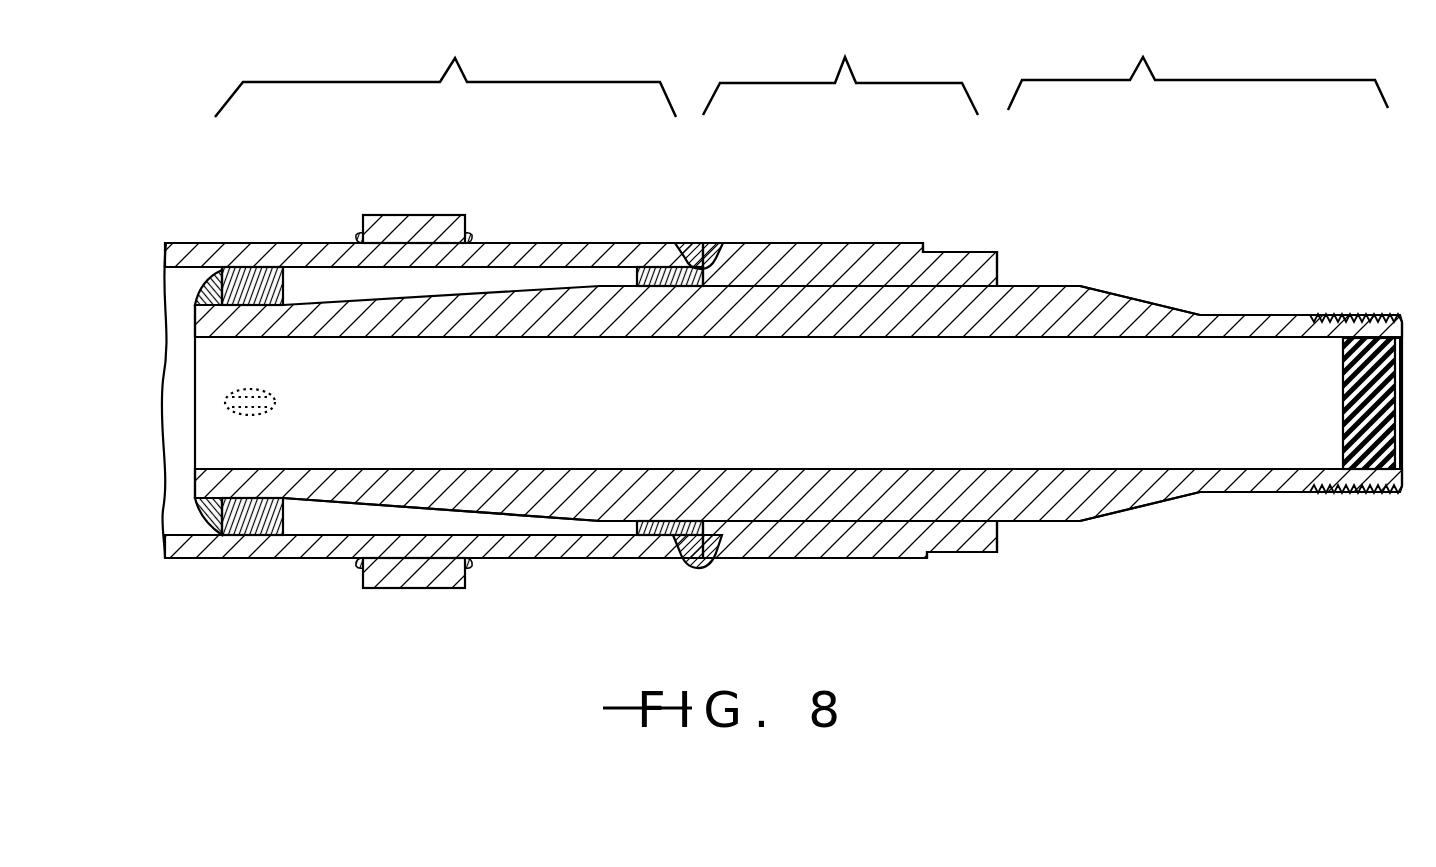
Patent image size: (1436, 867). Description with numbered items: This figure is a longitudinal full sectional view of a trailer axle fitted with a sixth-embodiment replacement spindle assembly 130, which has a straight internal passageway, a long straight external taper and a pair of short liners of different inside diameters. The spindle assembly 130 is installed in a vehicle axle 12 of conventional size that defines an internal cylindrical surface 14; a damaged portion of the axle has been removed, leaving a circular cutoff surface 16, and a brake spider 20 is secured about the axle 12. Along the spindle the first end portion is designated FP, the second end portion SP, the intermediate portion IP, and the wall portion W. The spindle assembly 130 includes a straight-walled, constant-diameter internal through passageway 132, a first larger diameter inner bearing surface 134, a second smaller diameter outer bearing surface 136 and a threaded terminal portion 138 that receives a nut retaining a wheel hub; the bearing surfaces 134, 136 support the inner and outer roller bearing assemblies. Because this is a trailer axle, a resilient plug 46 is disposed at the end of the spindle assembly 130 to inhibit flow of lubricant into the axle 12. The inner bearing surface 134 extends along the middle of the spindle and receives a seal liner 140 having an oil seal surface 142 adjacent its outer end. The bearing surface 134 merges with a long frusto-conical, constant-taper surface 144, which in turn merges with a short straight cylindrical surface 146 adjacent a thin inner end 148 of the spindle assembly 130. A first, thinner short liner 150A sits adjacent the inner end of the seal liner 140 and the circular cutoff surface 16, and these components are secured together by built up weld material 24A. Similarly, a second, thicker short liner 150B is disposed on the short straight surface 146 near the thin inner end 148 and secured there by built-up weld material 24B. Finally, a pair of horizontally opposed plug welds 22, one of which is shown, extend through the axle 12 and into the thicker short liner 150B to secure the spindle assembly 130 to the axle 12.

The vehicle axle 12 is at (307, 245).
The internal cylindrical surface 14 is at (197, 268).
The circular cutoff surface 16 is at (688, 250).
The brake spider 20 is at (425, 215).
The plug welds 22 is at (268, 402).
The built up weld material 24A is at (690, 567).
The built-up weld material 24B is at (207, 522).
The resilient plug 46 is at (1392, 368).
The replacement spindle assembly 130 is at (1142, 257).
The internal through passageway 132 is at (805, 398).
The inner bearing surface 134 is at (1035, 287).
The outer bearing surface 136 is at (1255, 315).
The threaded terminal portion 138 is at (1345, 312).
The seal liner 140 is at (790, 255).
The oil seal surface 142 is at (950, 250).
The frusto-conical surface 144 is at (490, 512).
The cylindrical surface 146 is at (283, 502).
The thin inner end 148 is at (195, 480).
The thinner short liner 150A is at (640, 268).
The thicker short liner 150B is at (258, 285).
The wall portion W is at (621, 490).
The second end portion SP is at (445, 72).
The intermediate portion IP is at (840, 70).
The first end portion FP is at (1198, 71).